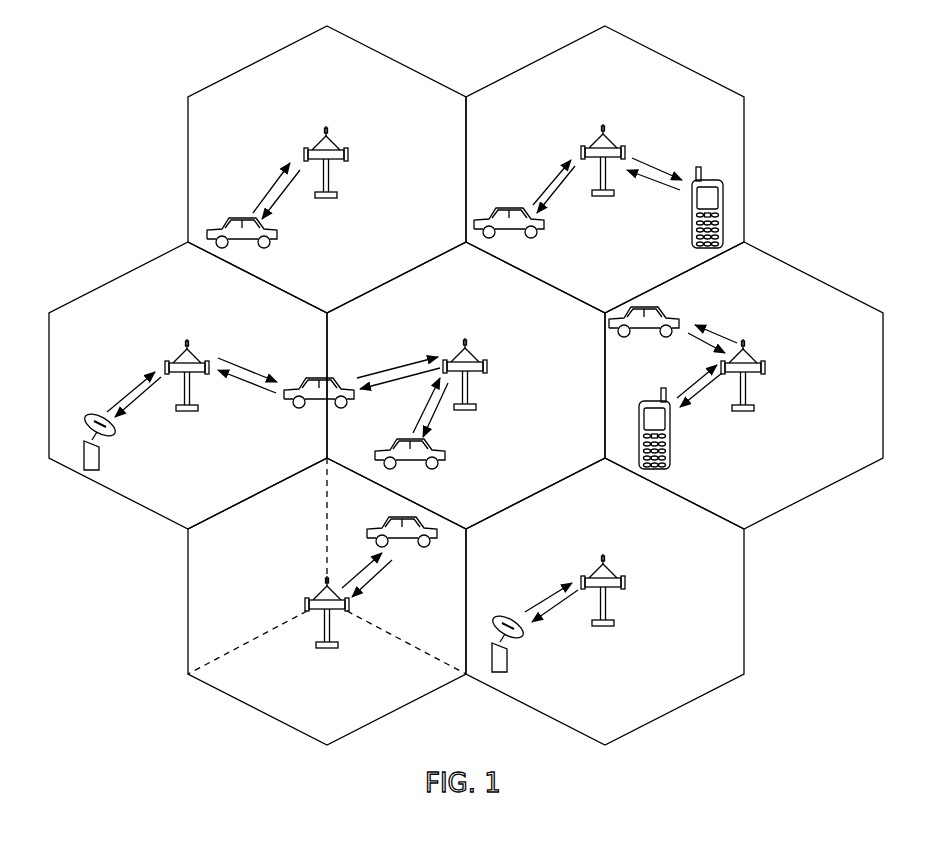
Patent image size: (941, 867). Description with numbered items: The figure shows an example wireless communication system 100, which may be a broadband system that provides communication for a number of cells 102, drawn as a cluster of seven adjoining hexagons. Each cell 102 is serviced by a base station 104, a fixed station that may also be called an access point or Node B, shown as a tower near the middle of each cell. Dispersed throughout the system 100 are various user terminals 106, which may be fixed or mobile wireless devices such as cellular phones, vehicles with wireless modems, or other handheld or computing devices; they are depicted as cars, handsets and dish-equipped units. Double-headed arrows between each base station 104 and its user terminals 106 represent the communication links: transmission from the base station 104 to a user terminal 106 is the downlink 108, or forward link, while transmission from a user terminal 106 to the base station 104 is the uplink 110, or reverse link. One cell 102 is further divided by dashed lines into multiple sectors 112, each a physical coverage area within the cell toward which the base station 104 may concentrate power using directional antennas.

The wireless communication system 100 is at (493, 385).
The cell 102 is at (266, 55).
The base station 104 is at (327, 133).
The user terminal 106 is at (279, 240).
The downlink 108 is at (278, 202).
The uplink 110 is at (273, 186).
The sector 112 is at (376, 704).